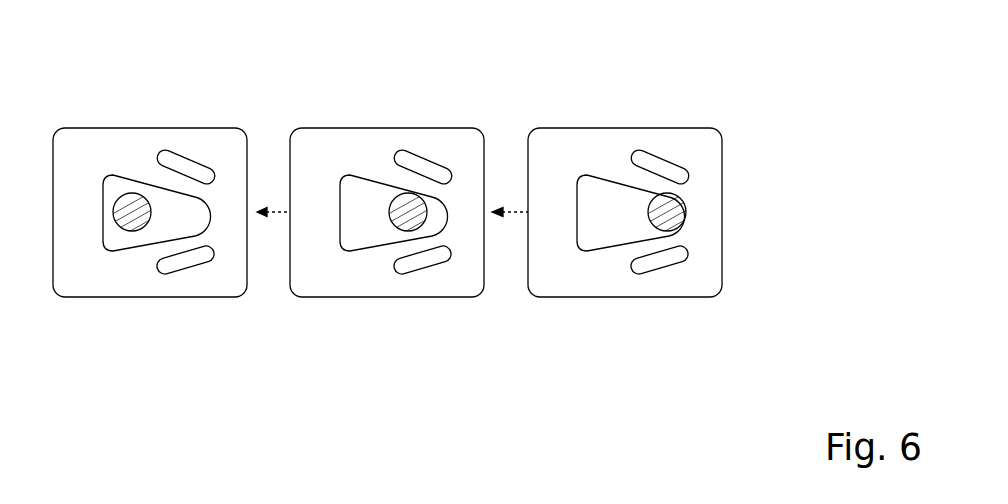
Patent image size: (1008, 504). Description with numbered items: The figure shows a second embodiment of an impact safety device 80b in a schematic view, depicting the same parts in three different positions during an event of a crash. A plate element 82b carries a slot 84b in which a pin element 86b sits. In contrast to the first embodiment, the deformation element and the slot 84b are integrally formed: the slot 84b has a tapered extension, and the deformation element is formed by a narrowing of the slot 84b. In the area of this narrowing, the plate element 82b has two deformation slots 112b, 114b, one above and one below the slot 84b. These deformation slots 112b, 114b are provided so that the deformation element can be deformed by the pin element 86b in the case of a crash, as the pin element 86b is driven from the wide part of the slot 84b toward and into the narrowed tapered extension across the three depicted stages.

The impact safety device 80b is at (743, 181).
The plate element 82b is at (90, 152).
The slot 84b is at (150, 252).
The pin element 86b is at (132, 220).
The deformation slot 112b is at (180, 150).
The deformation slot 114b is at (192, 262).